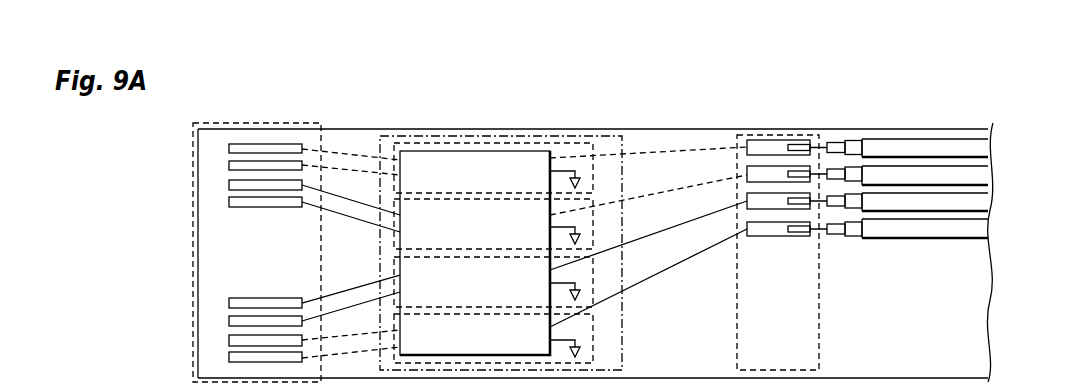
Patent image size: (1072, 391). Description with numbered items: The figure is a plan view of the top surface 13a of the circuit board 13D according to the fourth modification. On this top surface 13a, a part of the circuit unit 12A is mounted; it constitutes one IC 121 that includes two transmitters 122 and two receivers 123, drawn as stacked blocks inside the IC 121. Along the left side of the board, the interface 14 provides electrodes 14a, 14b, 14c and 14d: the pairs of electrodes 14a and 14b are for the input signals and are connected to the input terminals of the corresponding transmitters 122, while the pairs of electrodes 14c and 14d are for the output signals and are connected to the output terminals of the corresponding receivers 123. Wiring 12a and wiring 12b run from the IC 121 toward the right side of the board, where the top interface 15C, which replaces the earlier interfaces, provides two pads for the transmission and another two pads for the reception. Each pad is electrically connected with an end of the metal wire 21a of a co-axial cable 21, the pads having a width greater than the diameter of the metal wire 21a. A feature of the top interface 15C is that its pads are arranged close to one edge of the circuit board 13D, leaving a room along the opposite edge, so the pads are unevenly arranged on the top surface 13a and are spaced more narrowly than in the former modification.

The circuit board 13D is at (700, 127).
The top surface 13a is at (662, 140).
The interface 14 is at (268, 122).
The electrode 14a is at (287, 147).
The electrode 14b is at (243, 165).
The electrode 14c is at (282, 305).
The electrode 14d is at (247, 323).
The circuit unit 12A is at (494, 135).
The IC 121 is at (410, 148).
The transmitter 122 is at (496, 202).
The receiver 123 is at (496, 315).
The transmission wiring 12a is at (757, 157).
The reception wiring 12b is at (768, 203).
The top interface 15C is at (768, 132).
The metal wire 21a is at (800, 147).
The co-axial cable 21 is at (937, 148).